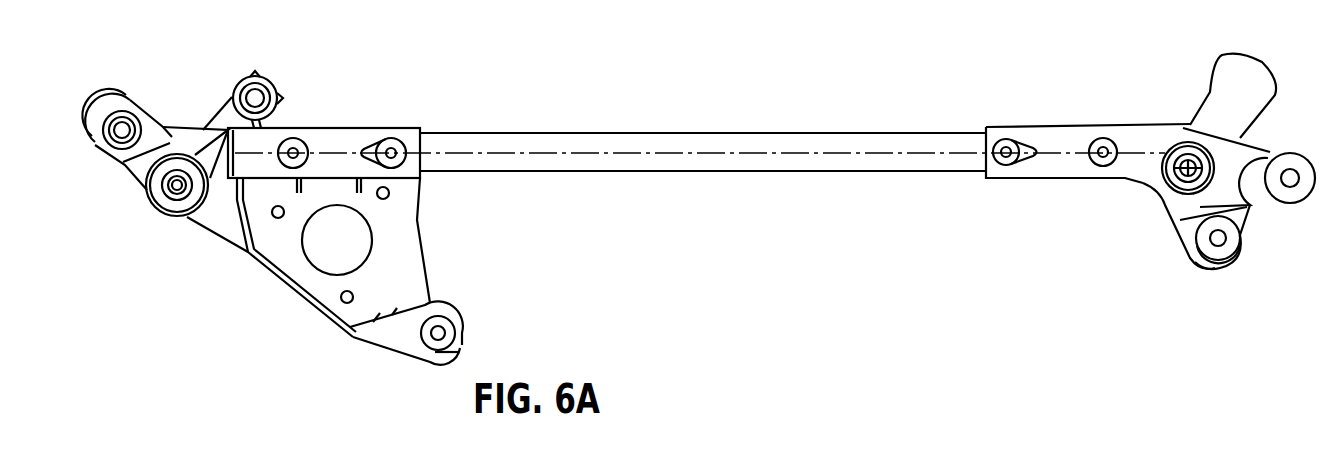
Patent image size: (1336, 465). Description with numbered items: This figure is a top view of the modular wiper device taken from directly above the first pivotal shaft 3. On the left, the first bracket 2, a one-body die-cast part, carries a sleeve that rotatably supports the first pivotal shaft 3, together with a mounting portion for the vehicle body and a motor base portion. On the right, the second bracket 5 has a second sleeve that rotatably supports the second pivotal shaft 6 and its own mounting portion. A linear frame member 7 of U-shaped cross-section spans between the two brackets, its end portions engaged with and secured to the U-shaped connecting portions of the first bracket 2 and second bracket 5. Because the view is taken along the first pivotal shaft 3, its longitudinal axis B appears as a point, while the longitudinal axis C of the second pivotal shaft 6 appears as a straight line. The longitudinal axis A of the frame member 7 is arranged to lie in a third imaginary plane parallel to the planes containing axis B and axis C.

The first bracket 2 is at (323, 295).
The first pivotal shaft 3 is at (150, 210).
The longitudinal axis of the first pivotal shaft B is at (182, 198).
The frame member 7 is at (650, 163).
The longitudinal axis line of the frame member A is at (915, 152).
The second bracket 5 is at (1052, 170).
The second pivotal shaft 6 is at (1163, 200).
The longitudinal axis of the second pivotal shaft C is at (1204, 168).